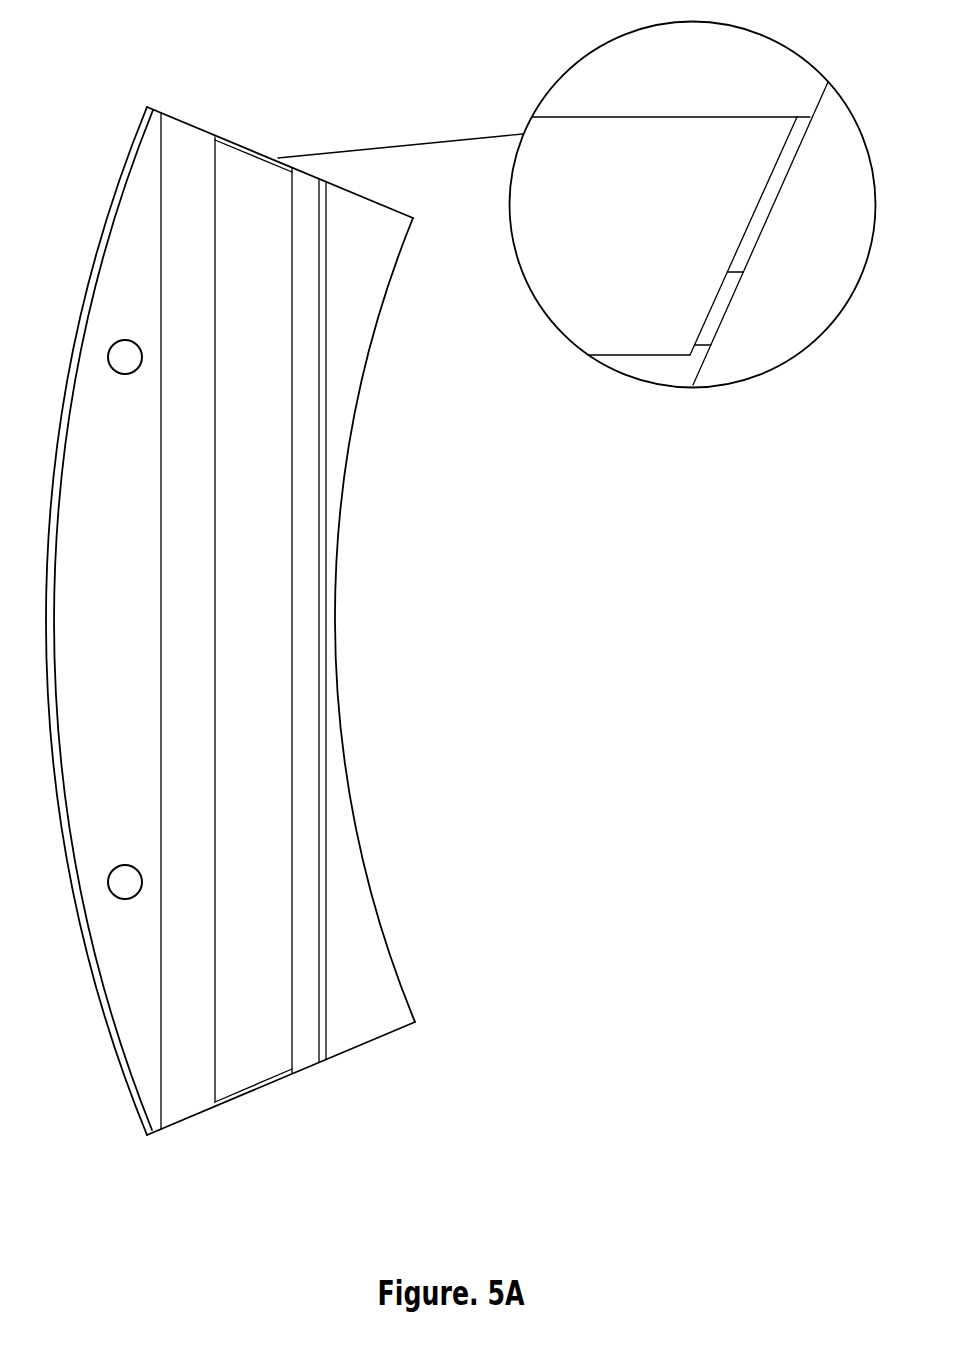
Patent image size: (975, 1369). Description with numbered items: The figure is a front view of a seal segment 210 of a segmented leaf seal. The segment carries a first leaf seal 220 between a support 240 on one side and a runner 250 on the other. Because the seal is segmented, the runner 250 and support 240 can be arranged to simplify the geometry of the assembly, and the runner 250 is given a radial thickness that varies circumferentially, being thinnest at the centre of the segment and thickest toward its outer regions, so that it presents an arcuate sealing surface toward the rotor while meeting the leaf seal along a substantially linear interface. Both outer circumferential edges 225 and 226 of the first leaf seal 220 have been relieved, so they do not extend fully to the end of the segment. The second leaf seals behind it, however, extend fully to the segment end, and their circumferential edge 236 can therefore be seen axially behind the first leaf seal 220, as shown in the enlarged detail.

The seal segment 210 is at (123, 1118).
The first leaf seal 220 is at (233, 658).
The outer circumferential edge 225 is at (247, 152).
The outer circumferential edge 226 is at (240, 1098).
The circumferential edge 236 is at (748, 258).
The support 240 is at (90, 658).
The runner 250 is at (348, 932).